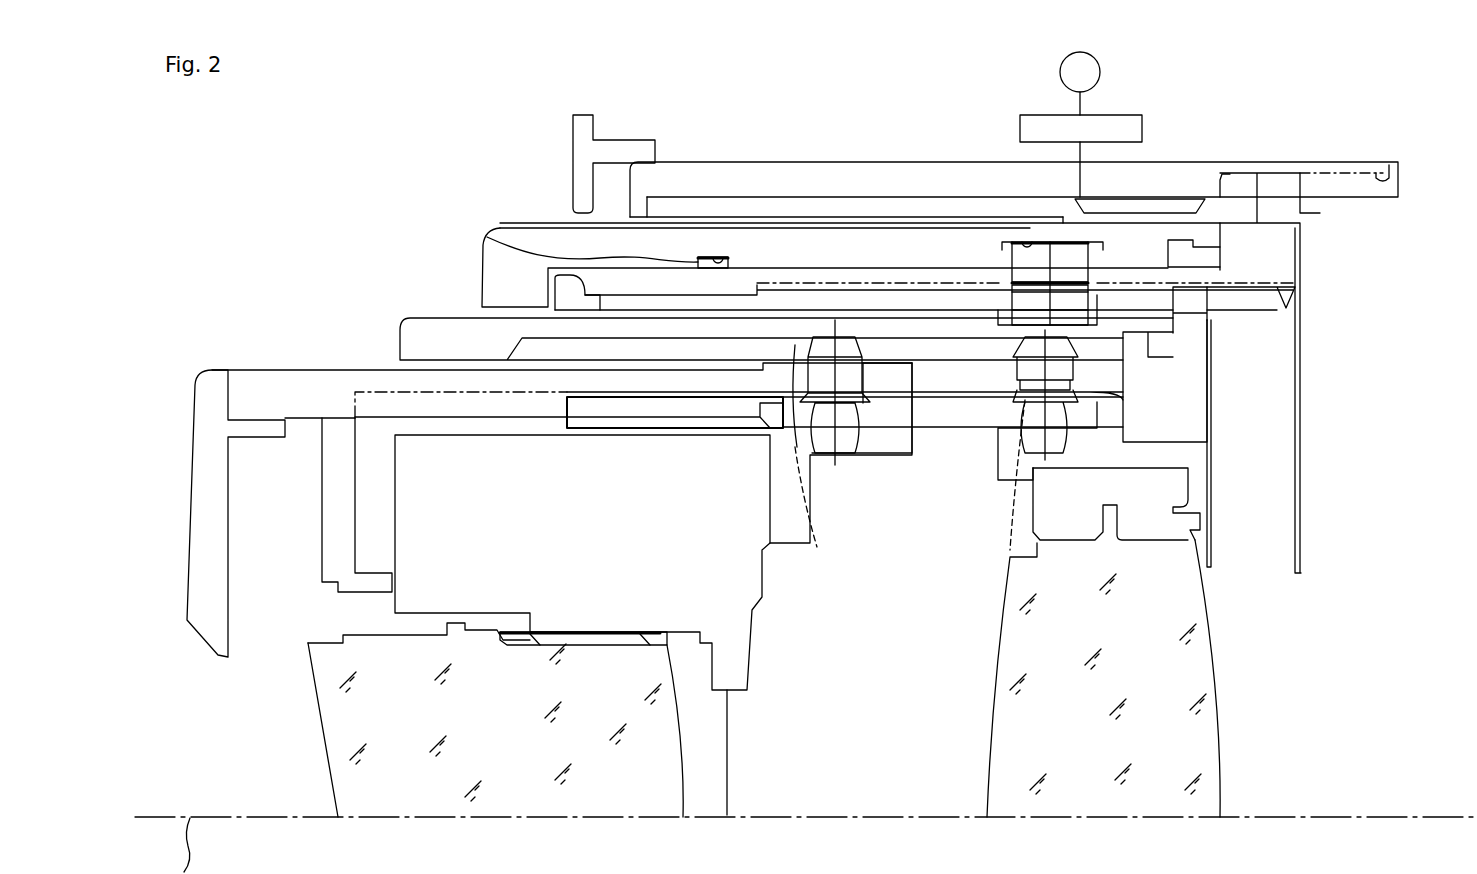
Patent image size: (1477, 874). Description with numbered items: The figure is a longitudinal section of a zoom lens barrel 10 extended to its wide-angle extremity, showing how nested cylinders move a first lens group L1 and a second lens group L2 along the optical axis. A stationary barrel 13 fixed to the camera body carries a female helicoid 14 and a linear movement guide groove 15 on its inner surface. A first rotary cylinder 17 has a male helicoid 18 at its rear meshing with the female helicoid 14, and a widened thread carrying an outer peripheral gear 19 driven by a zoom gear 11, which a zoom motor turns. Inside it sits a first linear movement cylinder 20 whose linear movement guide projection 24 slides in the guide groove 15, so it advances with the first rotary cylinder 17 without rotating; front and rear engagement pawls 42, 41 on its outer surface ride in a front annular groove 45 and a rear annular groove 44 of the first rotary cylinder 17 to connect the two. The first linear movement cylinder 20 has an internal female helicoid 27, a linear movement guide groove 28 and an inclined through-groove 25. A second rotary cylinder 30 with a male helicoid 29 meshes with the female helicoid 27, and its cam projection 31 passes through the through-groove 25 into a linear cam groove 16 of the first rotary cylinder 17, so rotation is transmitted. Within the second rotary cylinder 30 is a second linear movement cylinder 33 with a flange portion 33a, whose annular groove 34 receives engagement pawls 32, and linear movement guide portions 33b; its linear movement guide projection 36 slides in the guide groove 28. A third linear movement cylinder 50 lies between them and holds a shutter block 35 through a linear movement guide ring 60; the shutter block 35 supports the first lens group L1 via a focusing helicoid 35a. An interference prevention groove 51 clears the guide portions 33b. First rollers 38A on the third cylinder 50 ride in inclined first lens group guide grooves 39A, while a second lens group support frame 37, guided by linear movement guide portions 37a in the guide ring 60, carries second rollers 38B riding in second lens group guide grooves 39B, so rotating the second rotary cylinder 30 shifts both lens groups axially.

The zoom lens barrel 10 is at (328, 161).
The zoom gear 11 is at (1113, 117).
The stationary barrel 13 is at (810, 150).
The female helicoid 14 is at (700, 207).
The linear movement guide groove 15 is at (1383, 172).
The linear cam groove 16 is at (1022, 262).
The first rotary cylinder 17 is at (690, 216).
The male helicoid 18 is at (1162, 210).
The outer peripheral gear 19 is at (1222, 178).
The first linear movement cylinder 20 is at (838, 262).
The linear movement guide projection 24 is at (1285, 187).
The through-groove 25 is at (1078, 272).
The female helicoid 27 is at (495, 232).
The linear movement guide groove 28 is at (1288, 308).
The male helicoid 29 is at (1147, 300).
The second rotary cylinder 30 is at (437, 308).
The cam projection 31 is at (1012, 262).
The engagement pawl 32 is at (1160, 342).
The second linear movement cylinder 33 is at (617, 438).
The flange portion 33a is at (1193, 427).
The linear movement guide portion 33b is at (697, 420).
The annular groove 34 is at (1172, 350).
The shutter block 35 is at (753, 598).
The focusing helicoid 35a is at (632, 638).
The linear movement guide projection 36 is at (1200, 302).
The second lens group support frame 37 is at (1183, 487).
The linear movement guide portion 37a is at (950, 417).
The first roller 38A is at (852, 345).
The second roller 38B is at (1035, 347).
The first lens group guide groove 39A is at (817, 552).
The second lens group guide groove 39B is at (1010, 550).
The rear engagement pawl 41 is at (1185, 260).
The front engagement pawl 42 is at (595, 302).
The rear annular groove 44 is at (1193, 248).
The front annular groove 45 is at (718, 258).
The third linear movement cylinder 50 is at (285, 358).
The interference prevention groove 51 is at (503, 393).
The linear movement guide ring 60 is at (900, 440).
The first lens group L1 is at (418, 798).
The second lens group L2 is at (1089, 800).